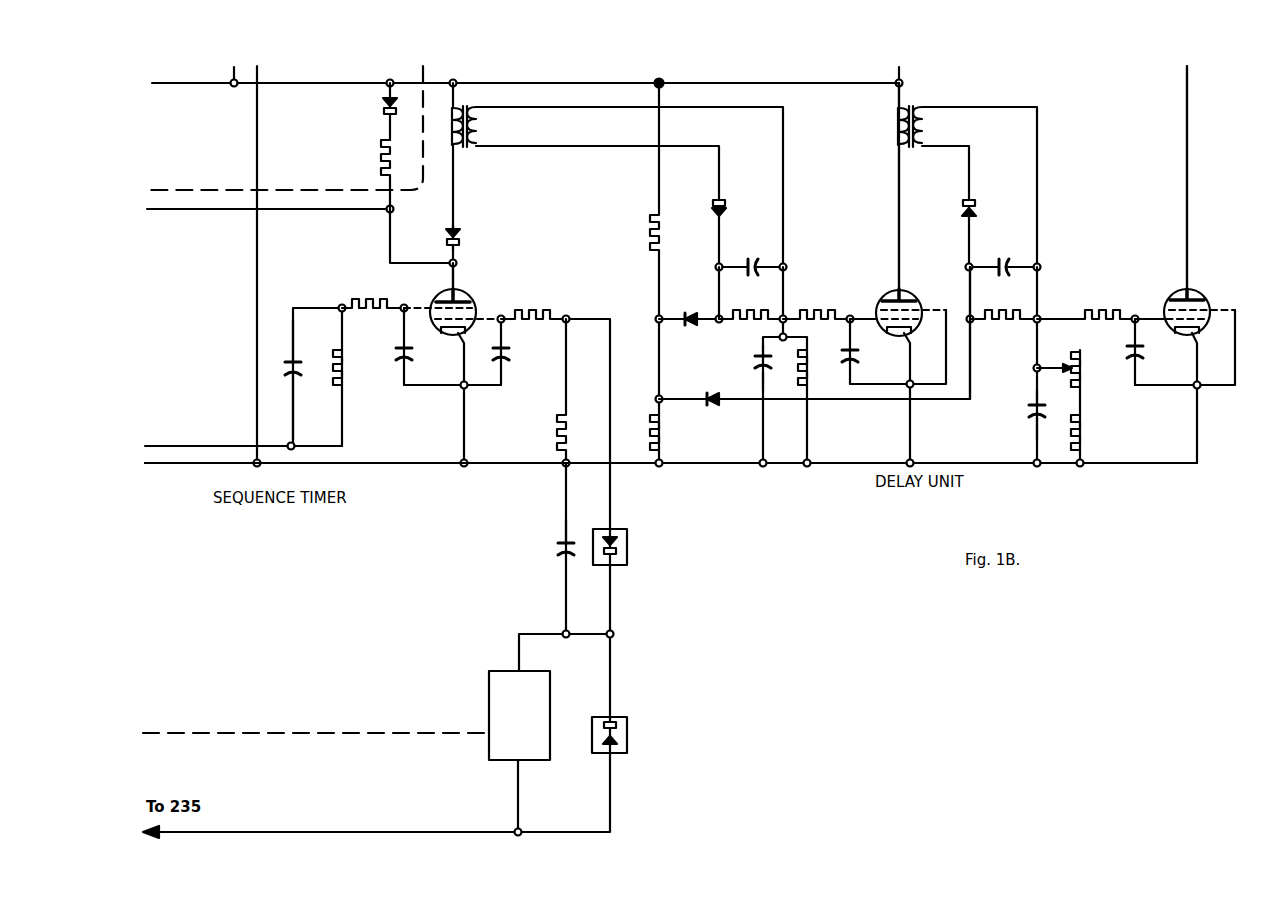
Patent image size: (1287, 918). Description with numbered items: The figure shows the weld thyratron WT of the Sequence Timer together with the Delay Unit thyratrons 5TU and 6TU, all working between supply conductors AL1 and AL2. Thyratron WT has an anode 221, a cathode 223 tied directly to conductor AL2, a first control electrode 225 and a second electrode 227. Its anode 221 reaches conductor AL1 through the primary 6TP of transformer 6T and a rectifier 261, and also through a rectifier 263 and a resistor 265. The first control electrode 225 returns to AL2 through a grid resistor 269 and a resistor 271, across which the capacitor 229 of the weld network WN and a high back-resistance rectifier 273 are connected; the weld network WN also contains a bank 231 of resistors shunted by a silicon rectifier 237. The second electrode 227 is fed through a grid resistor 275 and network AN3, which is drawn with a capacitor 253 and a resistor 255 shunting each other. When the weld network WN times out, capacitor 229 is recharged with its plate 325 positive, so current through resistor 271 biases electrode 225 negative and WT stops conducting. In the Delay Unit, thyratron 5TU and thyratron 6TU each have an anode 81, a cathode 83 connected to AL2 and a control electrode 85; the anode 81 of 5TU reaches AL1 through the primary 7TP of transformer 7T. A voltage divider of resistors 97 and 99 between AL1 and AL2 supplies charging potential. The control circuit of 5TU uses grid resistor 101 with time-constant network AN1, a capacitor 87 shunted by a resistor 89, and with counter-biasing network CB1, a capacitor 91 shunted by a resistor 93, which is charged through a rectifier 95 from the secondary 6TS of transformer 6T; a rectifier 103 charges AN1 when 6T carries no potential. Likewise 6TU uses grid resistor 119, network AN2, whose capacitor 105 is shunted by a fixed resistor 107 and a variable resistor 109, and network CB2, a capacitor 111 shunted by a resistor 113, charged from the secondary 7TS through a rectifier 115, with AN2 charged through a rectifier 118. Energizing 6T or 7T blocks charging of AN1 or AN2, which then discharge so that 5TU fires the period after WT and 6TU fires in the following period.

The rectifier 263 is at (380, 107).
The resistor 265 is at (380, 157).
The rectifier 261 is at (460, 233).
The transformer 6T is at (472, 150).
The primary of transformer 6T 6TP is at (448, 125).
The secondary of transformer 6T 6TS is at (482, 126).
The transformer 7T is at (909, 149).
The primary of transformer 7T 7TP is at (896, 125).
The secondary of transformer 7T 7TS is at (931, 123).
The conductor AL1 is at (802, 84).
The conductor AL2 is at (358, 466).
The resistor 97 is at (648, 228).
The rectifier 95 is at (728, 208).
The capacitor 91 is at (754, 255).
The rectifier 115 is at (978, 201).
The capacitor 111 is at (1004, 255).
The grid resistor 275 is at (368, 289).
The weld thyratron WT is at (443, 291).
The anode 221 is at (461, 293).
The second electrode 227 is at (432, 302).
The cathode 223 is at (460, 341).
The first control electrode 225 is at (480, 308).
The grid resistor 269 is at (538, 304).
The resistor 271 is at (555, 419).
The network AN3 is at (317, 377).
The resistor 253 is at (307, 372).
The resistor 255 is at (348, 358).
The rectifier 103 is at (692, 309).
The counter biasing network CB1 is at (751, 302).
The resistor 93 is at (763, 322).
The grid resistor 101 is at (828, 302).
The thyratron 5TU is at (907, 294).
The anode 81 is at (891, 296).
The control electrode 85 is at (877, 314).
The cathode 83 is at (903, 335).
The time-constant network AN1 is at (785, 399).
The capacitor 87 is at (754, 365).
The resistor 89 is at (811, 370).
The rectifier 118 is at (708, 405).
The resistor 99 is at (653, 421).
The counter-biasing network CB2 is at (1003, 365).
The resistor 113 is at (1016, 322).
The grid resistor 119 is at (1102, 302).
The thyratron 6TU is at (1196, 294).
The time-constant network AN2 is at (1060, 406).
The variable resistor 109 is at (1090, 384).
The fixed resistor 107 is at (1090, 423).
The capacitor 105 is at (1027, 409).
The capacitor 229 is at (554, 554).
The plate 325 is at (552, 546).
The high back-resistance rectifier 273 is at (627, 537).
The weld network WN is at (566, 651).
The bank of resistors 231 is at (484, 680).
The rectifier 237 is at (626, 732).